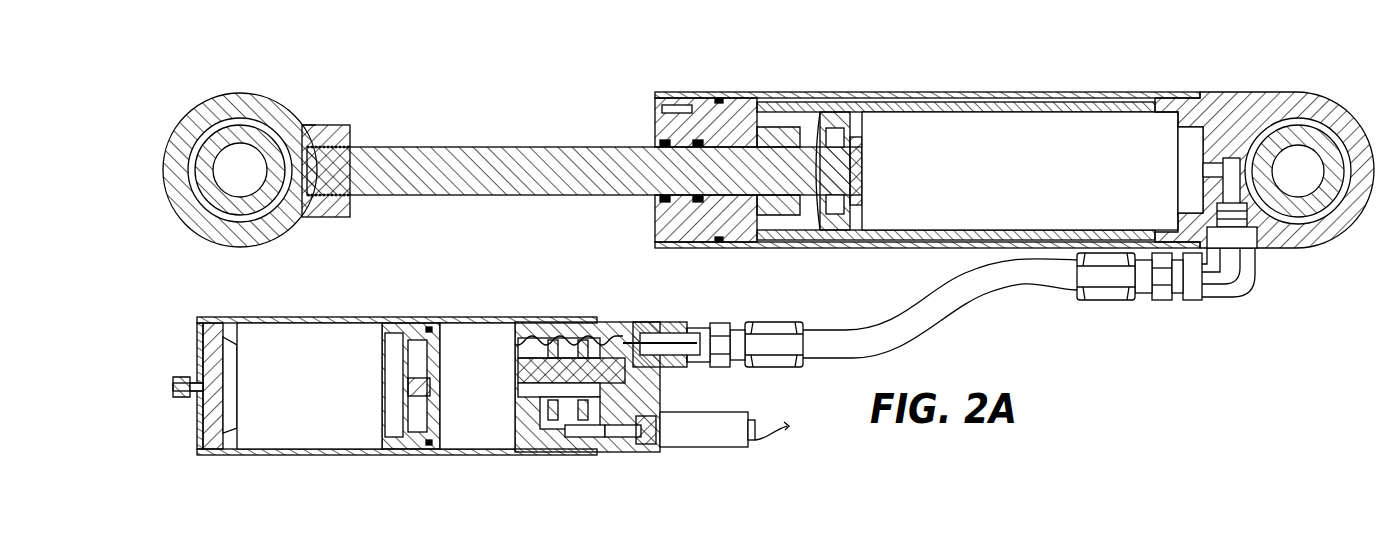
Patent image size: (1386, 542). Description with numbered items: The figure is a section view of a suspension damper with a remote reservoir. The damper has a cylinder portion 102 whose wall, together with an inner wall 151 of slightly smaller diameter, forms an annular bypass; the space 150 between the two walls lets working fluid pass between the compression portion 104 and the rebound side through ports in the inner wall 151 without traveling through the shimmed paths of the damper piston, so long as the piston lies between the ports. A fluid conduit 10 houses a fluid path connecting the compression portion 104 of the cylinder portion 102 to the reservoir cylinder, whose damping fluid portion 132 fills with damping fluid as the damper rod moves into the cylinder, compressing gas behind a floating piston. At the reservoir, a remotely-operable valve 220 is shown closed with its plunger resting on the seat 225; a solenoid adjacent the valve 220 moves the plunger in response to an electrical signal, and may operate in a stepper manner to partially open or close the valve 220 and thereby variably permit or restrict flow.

The cylinder portion 102 is at (873, 93).
The inner wall 151 is at (1018, 110).
The space 150 is at (1107, 93).
The compression portion 104 is at (1070, 182).
The fluid conduit 10 is at (1000, 278).
The damping fluid portion 132 is at (498, 395).
The seat 225 is at (583, 455).
The remotely-operable valve 220 is at (708, 447).